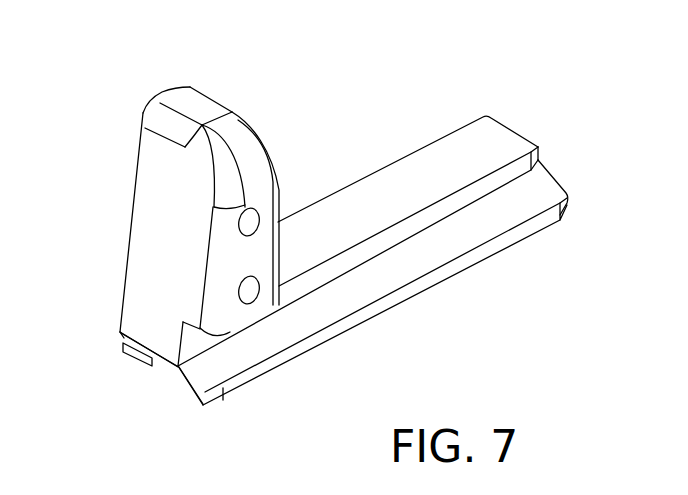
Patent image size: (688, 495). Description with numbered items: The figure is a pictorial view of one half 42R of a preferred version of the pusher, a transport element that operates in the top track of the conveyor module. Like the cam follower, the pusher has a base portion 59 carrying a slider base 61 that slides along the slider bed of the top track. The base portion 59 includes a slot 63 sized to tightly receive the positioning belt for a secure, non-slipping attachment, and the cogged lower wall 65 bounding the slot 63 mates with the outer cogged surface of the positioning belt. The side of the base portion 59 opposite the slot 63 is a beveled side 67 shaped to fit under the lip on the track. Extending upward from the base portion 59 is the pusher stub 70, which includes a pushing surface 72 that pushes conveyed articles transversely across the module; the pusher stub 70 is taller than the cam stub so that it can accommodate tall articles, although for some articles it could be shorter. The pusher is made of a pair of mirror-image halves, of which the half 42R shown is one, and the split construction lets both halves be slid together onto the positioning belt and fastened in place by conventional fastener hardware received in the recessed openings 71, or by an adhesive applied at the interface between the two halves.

The half of the pusher 42R is at (389, 80).
The pusher stub 70 is at (156, 186).
The pushing surface 72 is at (282, 207).
The beveled side 67 is at (505, 222).
The recessed openings 71 is at (252, 292).
The slot 63 is at (112, 336).
The cogged lower wall 65 is at (120, 358).
The slider base 61 is at (178, 398).
The base portion 59 is at (155, 368).